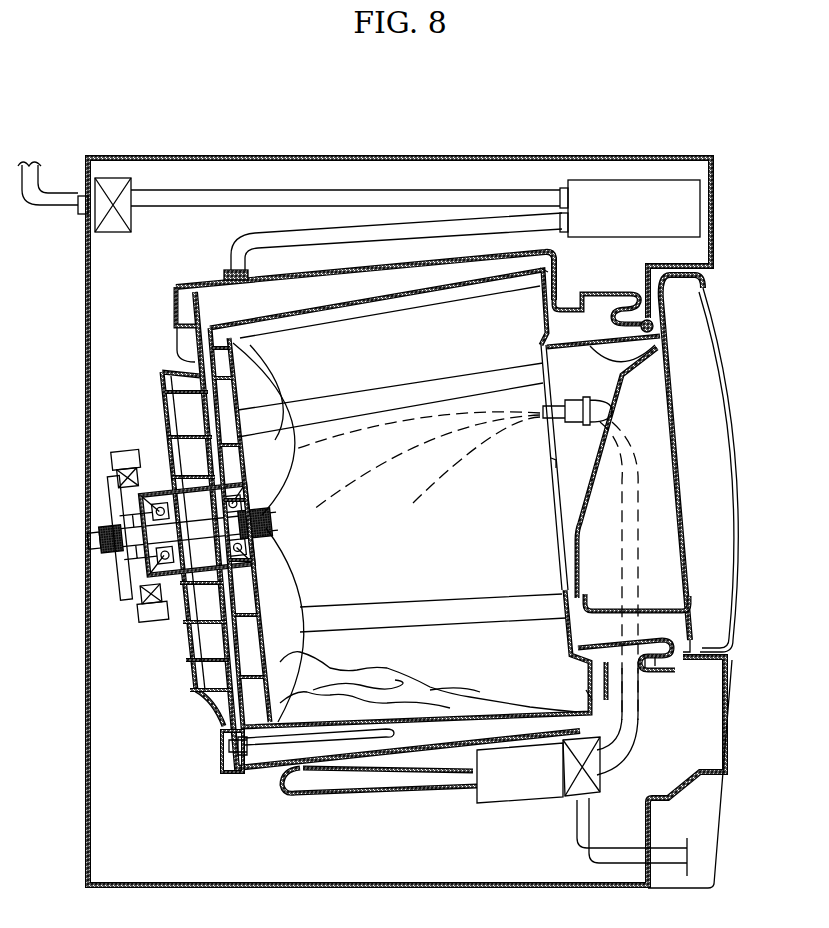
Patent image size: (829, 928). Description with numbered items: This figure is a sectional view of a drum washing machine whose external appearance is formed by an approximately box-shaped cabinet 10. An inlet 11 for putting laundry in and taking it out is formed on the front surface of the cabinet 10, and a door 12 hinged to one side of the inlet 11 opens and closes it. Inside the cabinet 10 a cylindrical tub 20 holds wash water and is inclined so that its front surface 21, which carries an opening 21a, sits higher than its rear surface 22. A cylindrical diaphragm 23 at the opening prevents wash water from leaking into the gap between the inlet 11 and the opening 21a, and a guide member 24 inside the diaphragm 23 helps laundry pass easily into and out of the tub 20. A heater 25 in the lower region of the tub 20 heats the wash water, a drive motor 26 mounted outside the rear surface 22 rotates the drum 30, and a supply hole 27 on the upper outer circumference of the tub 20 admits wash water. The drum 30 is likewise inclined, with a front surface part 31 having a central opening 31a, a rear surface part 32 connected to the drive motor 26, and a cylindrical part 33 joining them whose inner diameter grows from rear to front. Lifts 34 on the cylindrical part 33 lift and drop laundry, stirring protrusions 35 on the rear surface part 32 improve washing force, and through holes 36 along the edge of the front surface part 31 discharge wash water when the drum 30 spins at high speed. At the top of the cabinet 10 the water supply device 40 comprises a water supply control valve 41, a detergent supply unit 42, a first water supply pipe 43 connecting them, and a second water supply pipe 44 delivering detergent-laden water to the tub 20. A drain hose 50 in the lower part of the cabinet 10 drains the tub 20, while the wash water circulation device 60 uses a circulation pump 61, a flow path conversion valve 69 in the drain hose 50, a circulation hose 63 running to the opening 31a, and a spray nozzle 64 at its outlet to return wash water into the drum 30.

The cabinet 10 is at (425, 146).
The inlet 11 is at (704, 271).
The door 12 is at (731, 434).
The tub 20 is at (168, 316).
The front surface 21 is at (565, 283).
The opening 21a is at (654, 327).
The rear surface 22 is at (178, 346).
The diaphragm 23 is at (655, 679).
The guide member 24 is at (623, 376).
The heater 25 is at (259, 750).
The drive motor 26 is at (118, 568).
The supply hole 27 is at (229, 272).
The drum 30 is at (366, 290).
The front surface part 31 is at (546, 320).
The opening 31a is at (551, 462).
The rear surface part 32 is at (250, 364).
The cylindrical part 33 is at (316, 306).
The lifts 34 is at (387, 390).
The stirring protrusions 35 is at (265, 387).
The through holes 36 is at (542, 289).
The water supply device 40 is at (542, 176).
The water supply control valve 41 is at (114, 180).
The detergent supply unit 42 is at (652, 185).
The first water supply pipe 43 is at (266, 238).
The second water supply pipe 44 is at (187, 198).
The drain hose 50 is at (350, 796).
The wash water circulation device 60 is at (537, 810).
The circulation pump 61 is at (502, 803).
The circulation hose 63 is at (639, 726).
The spray nozzle 64 is at (571, 400).
The flow path conversion valve 69 is at (590, 782).